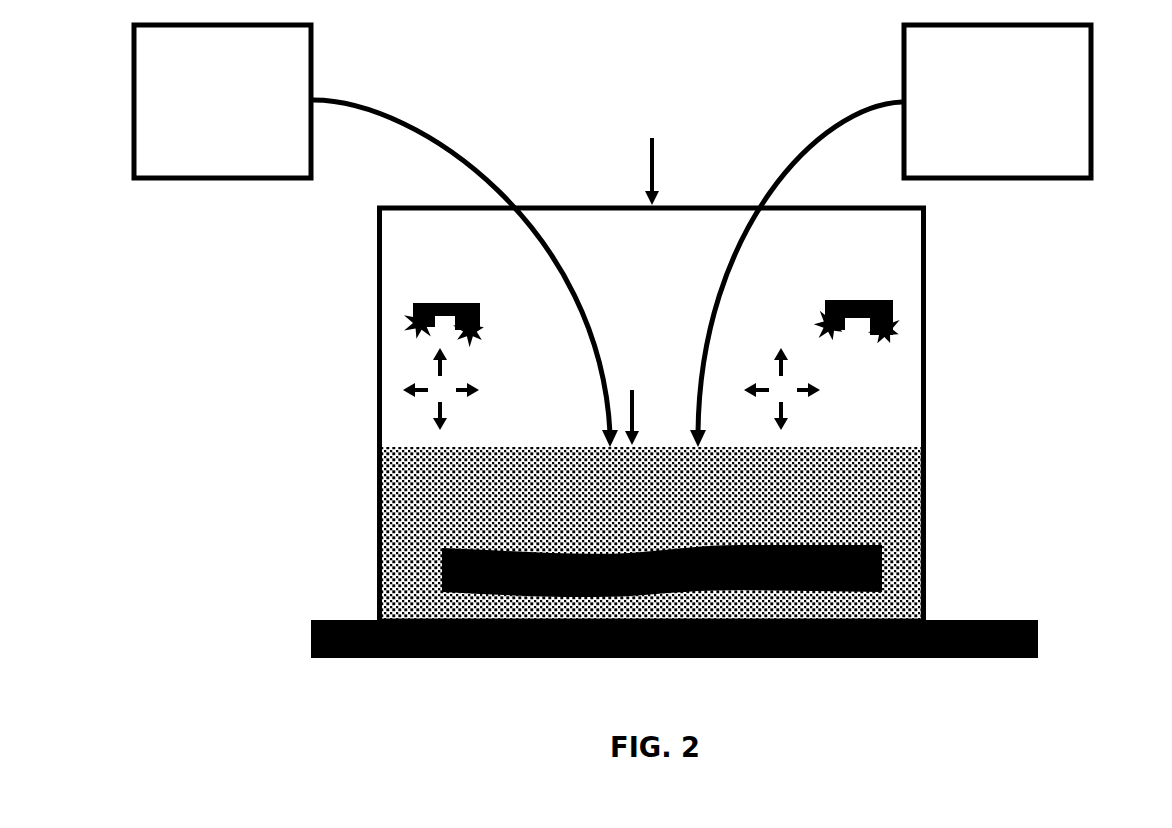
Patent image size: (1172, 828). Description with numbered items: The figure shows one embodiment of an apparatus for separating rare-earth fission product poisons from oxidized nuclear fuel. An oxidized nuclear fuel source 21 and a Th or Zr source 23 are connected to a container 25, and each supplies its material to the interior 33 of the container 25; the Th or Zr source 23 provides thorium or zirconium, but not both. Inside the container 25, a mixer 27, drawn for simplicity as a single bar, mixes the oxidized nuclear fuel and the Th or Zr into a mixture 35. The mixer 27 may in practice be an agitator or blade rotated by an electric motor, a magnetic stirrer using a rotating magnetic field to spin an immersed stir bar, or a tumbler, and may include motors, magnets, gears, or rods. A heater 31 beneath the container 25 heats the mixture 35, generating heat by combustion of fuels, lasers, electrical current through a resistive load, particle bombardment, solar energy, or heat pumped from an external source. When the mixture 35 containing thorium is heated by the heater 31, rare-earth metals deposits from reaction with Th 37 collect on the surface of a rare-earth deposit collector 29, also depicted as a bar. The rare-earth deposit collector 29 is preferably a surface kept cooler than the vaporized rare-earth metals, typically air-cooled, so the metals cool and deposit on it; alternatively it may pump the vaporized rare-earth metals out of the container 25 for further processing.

The oxidized nuclear fuel source 21 is at (222, 101).
The Th or Zr source 23 is at (997, 101).
The container 25 is at (651, 156).
The mixer 27 is at (662, 544).
The rare-earth deposit collector 29 is at (653, 283).
The heater 31 is at (722, 621).
The interior 33 is at (611, 389).
The mixture 35 is at (631, 402).
The rare-earth metals deposits from reaction with Th 37 is at (654, 351).